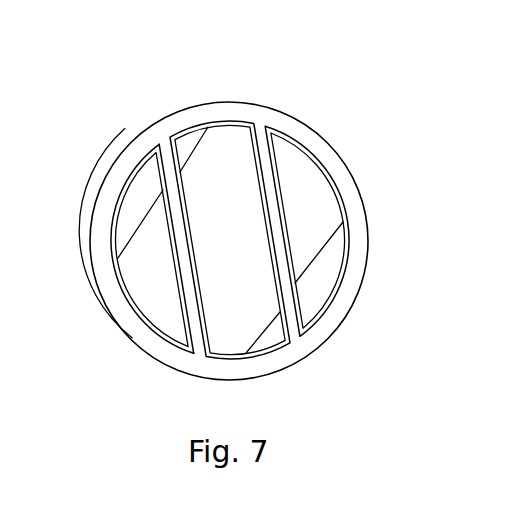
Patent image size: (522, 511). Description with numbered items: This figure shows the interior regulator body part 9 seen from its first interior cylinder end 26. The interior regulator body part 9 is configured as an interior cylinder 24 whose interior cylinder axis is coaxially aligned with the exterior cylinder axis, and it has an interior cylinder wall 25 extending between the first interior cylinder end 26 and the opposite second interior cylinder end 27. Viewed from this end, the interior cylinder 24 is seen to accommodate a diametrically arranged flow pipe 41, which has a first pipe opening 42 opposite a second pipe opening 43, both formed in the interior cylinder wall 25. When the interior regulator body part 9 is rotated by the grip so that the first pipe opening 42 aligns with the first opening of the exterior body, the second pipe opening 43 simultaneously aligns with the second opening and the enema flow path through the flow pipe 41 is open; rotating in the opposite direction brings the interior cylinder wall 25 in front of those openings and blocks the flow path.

The interior regulator body part 9 is at (82, 233).
The interior cylinder 24 is at (196, 118).
The interior cylinder wall 25 is at (258, 106).
The first interior cylinder end 26 is at (128, 316).
The second interior cylinder end 27 is at (120, 150).
The flow pipe 41 is at (237, 327).
The first pipe opening 42 is at (149, 352).
The second pipe opening 43 is at (320, 135).